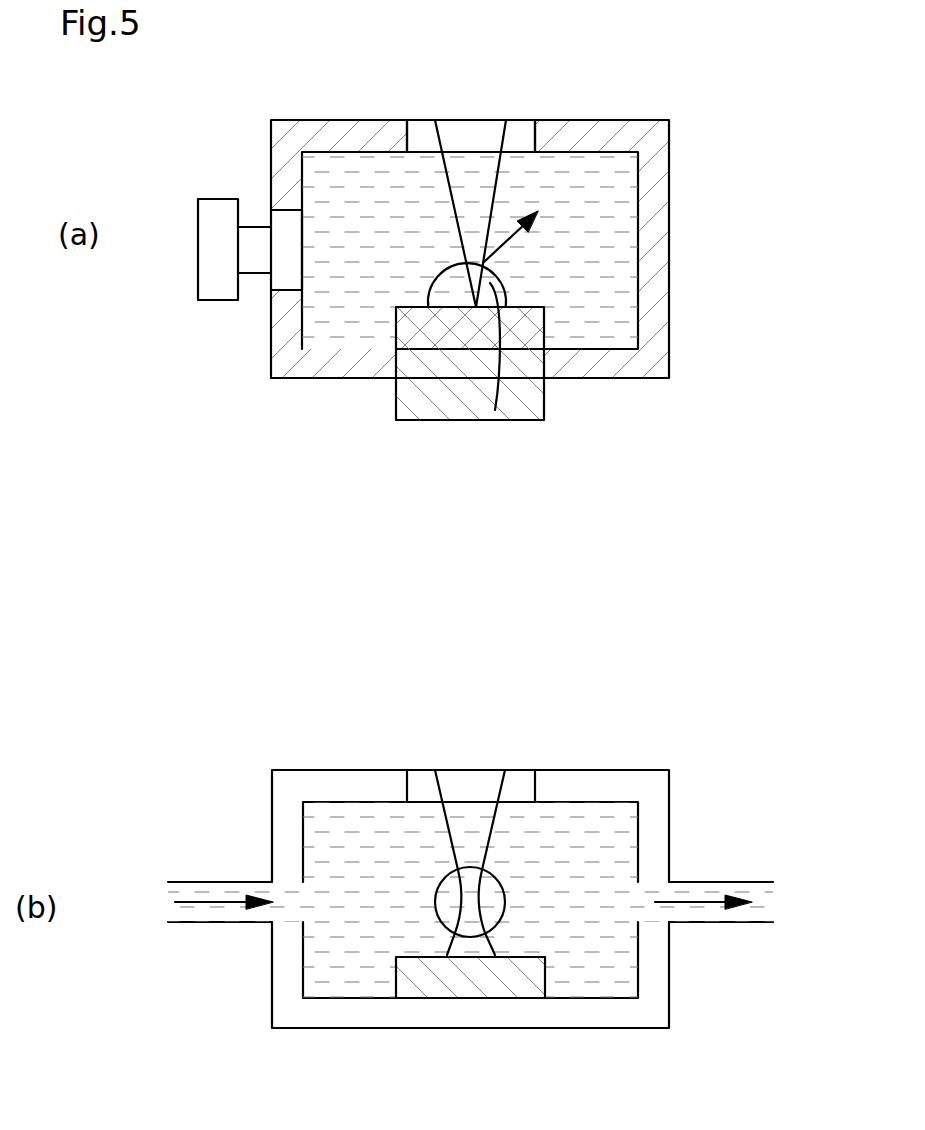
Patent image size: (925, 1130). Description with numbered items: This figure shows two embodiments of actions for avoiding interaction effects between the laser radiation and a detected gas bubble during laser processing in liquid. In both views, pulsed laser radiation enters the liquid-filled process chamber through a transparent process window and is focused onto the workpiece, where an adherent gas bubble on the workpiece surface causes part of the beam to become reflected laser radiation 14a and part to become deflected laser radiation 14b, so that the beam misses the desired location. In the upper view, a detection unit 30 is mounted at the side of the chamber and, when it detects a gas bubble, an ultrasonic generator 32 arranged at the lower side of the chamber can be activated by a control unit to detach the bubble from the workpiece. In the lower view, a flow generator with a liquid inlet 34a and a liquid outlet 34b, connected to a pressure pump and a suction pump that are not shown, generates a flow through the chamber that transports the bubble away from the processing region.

The reflected laser radiation 14a is at (483, 262).
The deflected laser radiation 14b is at (495, 410).
The detection unit 30 is at (208, 199).
The ultrasonic generator 32 is at (461, 419).
The liquid inlet 34a is at (148, 900).
The liquid outlet 34b is at (793, 900).